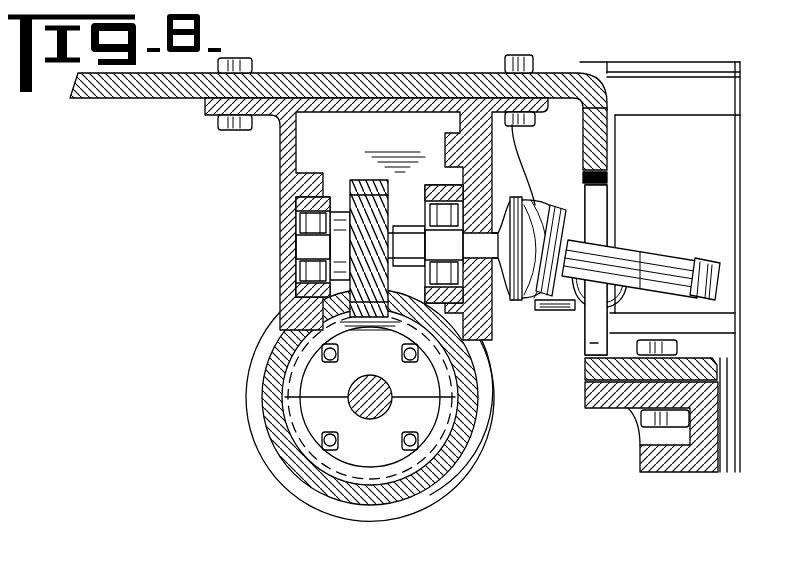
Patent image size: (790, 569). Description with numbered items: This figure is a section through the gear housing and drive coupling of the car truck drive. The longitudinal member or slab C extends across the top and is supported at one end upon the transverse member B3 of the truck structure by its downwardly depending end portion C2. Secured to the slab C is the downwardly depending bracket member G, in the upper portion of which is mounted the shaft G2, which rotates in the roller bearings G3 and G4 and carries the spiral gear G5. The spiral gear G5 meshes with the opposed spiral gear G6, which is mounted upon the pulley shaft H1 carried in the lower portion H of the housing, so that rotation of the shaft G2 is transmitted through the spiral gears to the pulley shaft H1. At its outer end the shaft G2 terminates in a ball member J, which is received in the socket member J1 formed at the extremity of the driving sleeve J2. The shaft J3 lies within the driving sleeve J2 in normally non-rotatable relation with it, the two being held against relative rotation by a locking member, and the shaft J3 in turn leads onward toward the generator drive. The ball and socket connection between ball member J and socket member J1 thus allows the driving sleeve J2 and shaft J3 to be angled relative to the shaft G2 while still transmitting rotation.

The longitudinal member or slab C is at (128, 92).
The downwardly depending end portion C2 is at (600, 155).
The downwardly depending bracket member G is at (290, 140).
The shaft G2 is at (400, 233).
The roller bearing G3 is at (308, 202).
The roller bearing G4 is at (438, 190).
The spiral gear G5 is at (362, 183).
The opposed spiral gear G6 is at (325, 330).
The lower portion of the housing H is at (268, 375).
The pulley shaft H1 is at (348, 407).
The ball member J is at (530, 235).
The socket member J1 is at (567, 229).
The driving sleeve J2 is at (652, 252).
The shaft J3 is at (712, 260).
The transverse member B3 is at (685, 462).